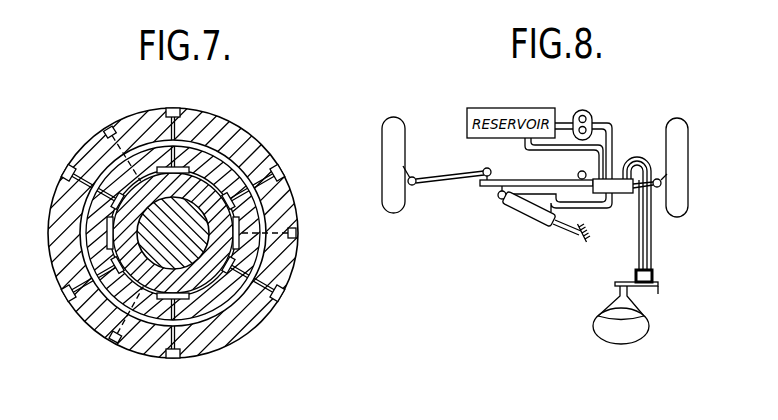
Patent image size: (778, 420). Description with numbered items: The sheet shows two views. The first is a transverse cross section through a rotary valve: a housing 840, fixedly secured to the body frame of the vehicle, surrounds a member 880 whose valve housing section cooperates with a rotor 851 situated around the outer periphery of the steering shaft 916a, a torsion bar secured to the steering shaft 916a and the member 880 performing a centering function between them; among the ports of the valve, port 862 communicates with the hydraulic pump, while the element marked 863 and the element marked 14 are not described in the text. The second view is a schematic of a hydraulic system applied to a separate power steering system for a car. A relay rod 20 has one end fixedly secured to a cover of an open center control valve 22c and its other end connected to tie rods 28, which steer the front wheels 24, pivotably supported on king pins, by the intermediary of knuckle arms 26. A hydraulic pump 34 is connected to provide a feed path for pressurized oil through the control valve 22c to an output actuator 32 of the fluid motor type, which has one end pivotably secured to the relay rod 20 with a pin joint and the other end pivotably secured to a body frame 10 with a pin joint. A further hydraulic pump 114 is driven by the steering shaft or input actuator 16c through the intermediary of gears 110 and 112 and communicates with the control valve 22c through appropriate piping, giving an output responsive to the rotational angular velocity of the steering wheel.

In FIG. 8, the body frame 10 is at (579, 250).
In FIG. 8, the resilient bulb 14 is at (650, 331).
In FIG. 8, the steering shaft or input actuator 16c is at (613, 296).
In FIG. 8, the relay rod 20 is at (527, 180).
In FIG. 8, the open center control valve 22c is at (626, 194).
In FIG. 8, the front wheels 24 is at (393, 116).
In FIG. 8, the knuckle arms 26 is at (408, 170).
In FIG. 8, the tie rods 28 is at (442, 179).
In FIG. 8, the output actuator 32 is at (518, 213).
In FIG. 8, the hydraulic pump 34 is at (581, 110).
In FIG. 8, the gear 110 is at (615, 284).
In FIG. 8, the gear 112 is at (658, 288).
In FIG. 8, the hydraulic pump 114 is at (652, 270).
In FIG. 7, the housing 840 is at (234, 140).
In FIG. 7, the rotor 851 is at (197, 280).
In FIG. 7, the port 862 is at (173, 108).
In FIG. 7, the pin 863 is at (114, 126).
In FIG. 7, the member 880 is at (229, 177).
In FIG. 7, the steering shaft 916a is at (153, 262).